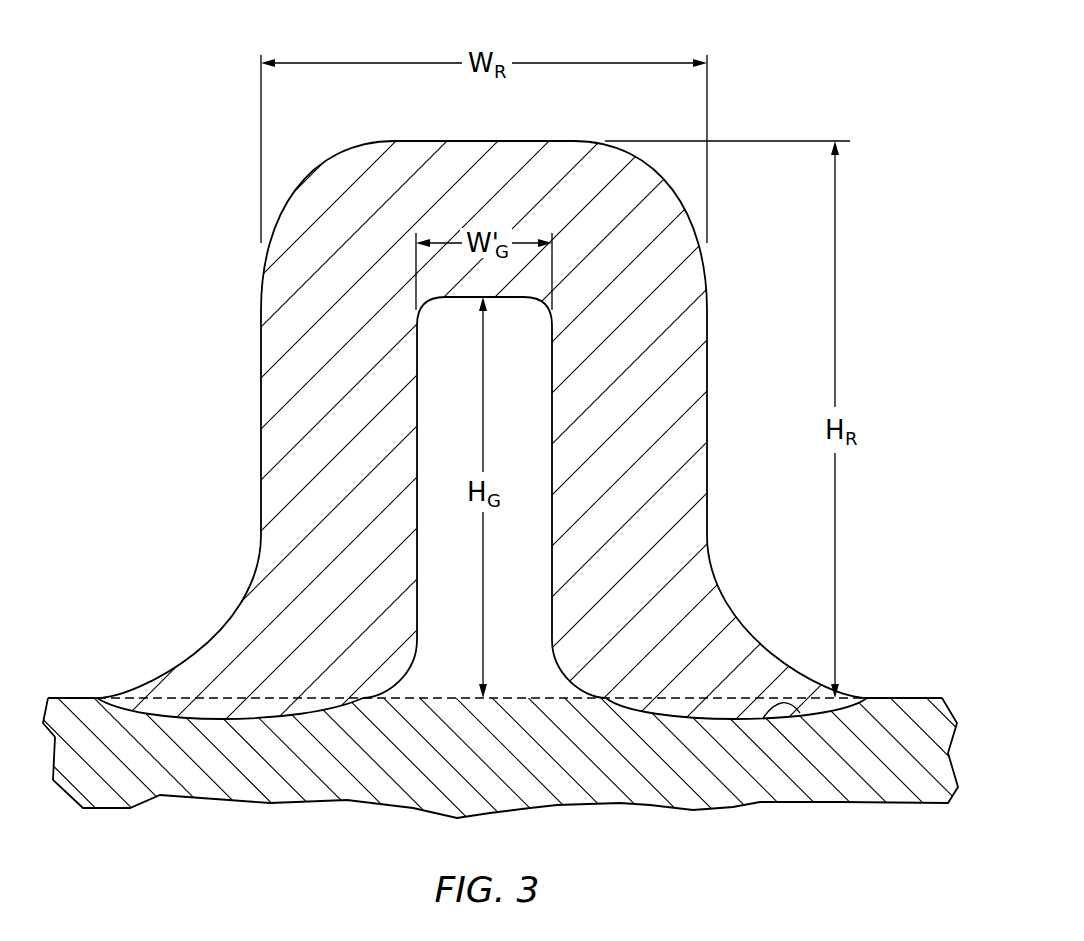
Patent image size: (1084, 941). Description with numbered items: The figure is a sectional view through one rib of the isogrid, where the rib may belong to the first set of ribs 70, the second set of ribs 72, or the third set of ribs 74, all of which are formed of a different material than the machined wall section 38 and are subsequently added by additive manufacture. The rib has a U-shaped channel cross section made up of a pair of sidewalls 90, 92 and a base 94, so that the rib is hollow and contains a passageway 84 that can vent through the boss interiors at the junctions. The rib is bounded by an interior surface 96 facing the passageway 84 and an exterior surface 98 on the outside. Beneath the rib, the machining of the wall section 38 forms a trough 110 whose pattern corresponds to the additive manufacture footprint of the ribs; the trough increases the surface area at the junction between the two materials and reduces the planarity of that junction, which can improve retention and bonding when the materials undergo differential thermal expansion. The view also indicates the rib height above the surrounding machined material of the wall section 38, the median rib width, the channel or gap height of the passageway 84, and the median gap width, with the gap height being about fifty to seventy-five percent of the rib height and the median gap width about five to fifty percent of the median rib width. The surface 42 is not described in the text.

The first set of ribs 70 is at (542, 470).
The second set of ribs 72 is at (542, 470).
The third set of ribs 74 is at (542, 470).
The base 94 is at (503, 170).
The sidewall 92 is at (663, 348).
The exterior surface 98 is at (708, 430).
The sidewall 90 is at (285, 413).
The passageway 84 is at (482, 497).
The interior surface 96 is at (552, 436).
The substrate surface 42 is at (910, 698).
The trough 110 is at (800, 713).
The wall section 38 is at (312, 778).